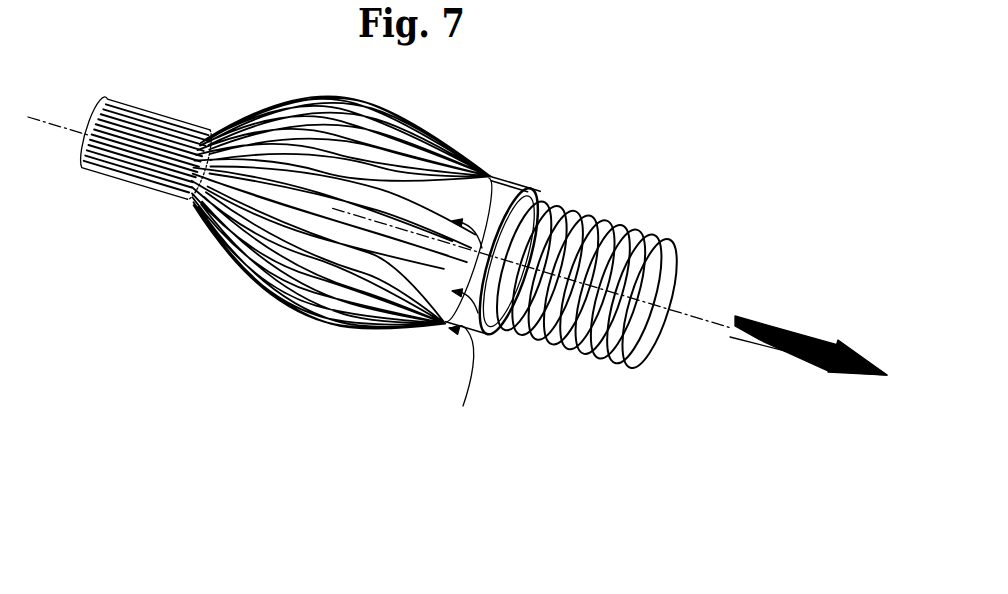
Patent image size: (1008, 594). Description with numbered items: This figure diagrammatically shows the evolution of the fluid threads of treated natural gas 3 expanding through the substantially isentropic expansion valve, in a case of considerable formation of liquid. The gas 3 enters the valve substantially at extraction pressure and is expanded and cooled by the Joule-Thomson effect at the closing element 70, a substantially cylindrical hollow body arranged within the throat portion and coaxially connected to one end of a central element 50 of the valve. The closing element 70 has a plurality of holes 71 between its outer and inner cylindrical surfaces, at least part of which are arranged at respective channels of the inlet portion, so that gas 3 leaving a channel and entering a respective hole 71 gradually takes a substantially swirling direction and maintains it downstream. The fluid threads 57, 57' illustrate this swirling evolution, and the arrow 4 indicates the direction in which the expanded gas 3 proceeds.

The treated natural gas 3 is at (145, 110).
The cage wires 57 is at (332, 208).
The helical spring coil 57' is at (599, 271).
The closing element 70 is at (505, 198).
The holes 71 is at (454, 375).
The central element 50 is at (245, 352).
The direction arrow 4 is at (775, 333).